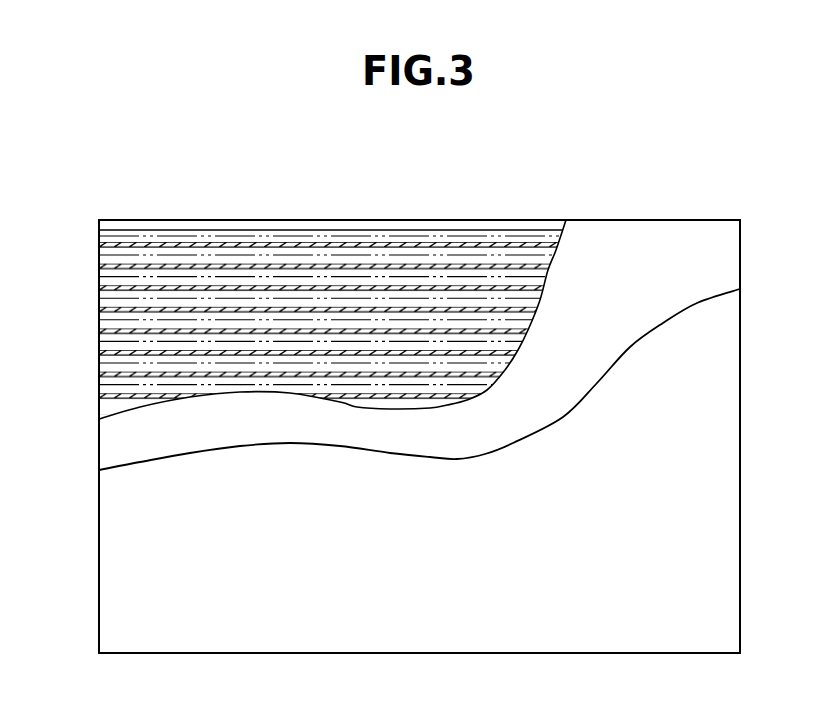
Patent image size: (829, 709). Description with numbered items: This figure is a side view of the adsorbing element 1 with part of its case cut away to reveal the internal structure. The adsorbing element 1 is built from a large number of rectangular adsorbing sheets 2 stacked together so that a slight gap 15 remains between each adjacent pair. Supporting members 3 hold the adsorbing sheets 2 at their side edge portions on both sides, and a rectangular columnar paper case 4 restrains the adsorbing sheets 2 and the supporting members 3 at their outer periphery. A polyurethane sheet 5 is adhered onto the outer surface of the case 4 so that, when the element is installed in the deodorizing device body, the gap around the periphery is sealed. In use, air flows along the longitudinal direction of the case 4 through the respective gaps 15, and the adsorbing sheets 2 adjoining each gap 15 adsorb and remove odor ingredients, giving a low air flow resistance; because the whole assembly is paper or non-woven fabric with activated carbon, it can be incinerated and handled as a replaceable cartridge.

The adsorbing element 1 is at (706, 185).
The adsorbing sheets 2 is at (445, 287).
The supporting members 3 is at (125, 300).
The case 4 is at (713, 267).
The polyurethane sheet 5 is at (717, 405).
The gap 15 is at (260, 273).